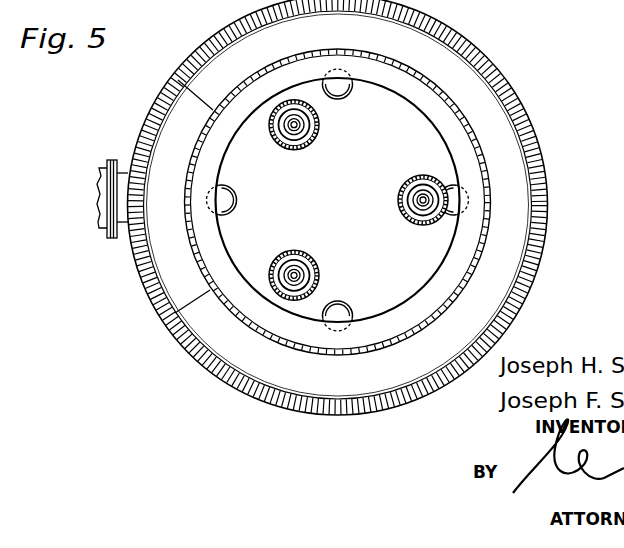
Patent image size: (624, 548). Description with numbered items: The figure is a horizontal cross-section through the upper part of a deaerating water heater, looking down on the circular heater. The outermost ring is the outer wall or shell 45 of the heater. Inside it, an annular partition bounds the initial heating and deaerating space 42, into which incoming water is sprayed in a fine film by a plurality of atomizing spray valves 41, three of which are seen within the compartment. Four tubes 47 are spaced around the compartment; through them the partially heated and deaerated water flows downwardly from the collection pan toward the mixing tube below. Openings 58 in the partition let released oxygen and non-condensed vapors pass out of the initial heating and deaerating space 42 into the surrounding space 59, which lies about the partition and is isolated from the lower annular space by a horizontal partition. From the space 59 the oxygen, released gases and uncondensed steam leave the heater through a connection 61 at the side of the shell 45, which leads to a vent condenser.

The atomizing spray valve 41 is at (297, 125).
The initial heating and deaerating space 42 is at (338, 200).
The outer wall or shell 45 is at (503, 88).
The tube 47 is at (341, 90).
The opening 58 is at (372, 55).
The space 59 is at (498, 149).
The connection 61 is at (118, 238).